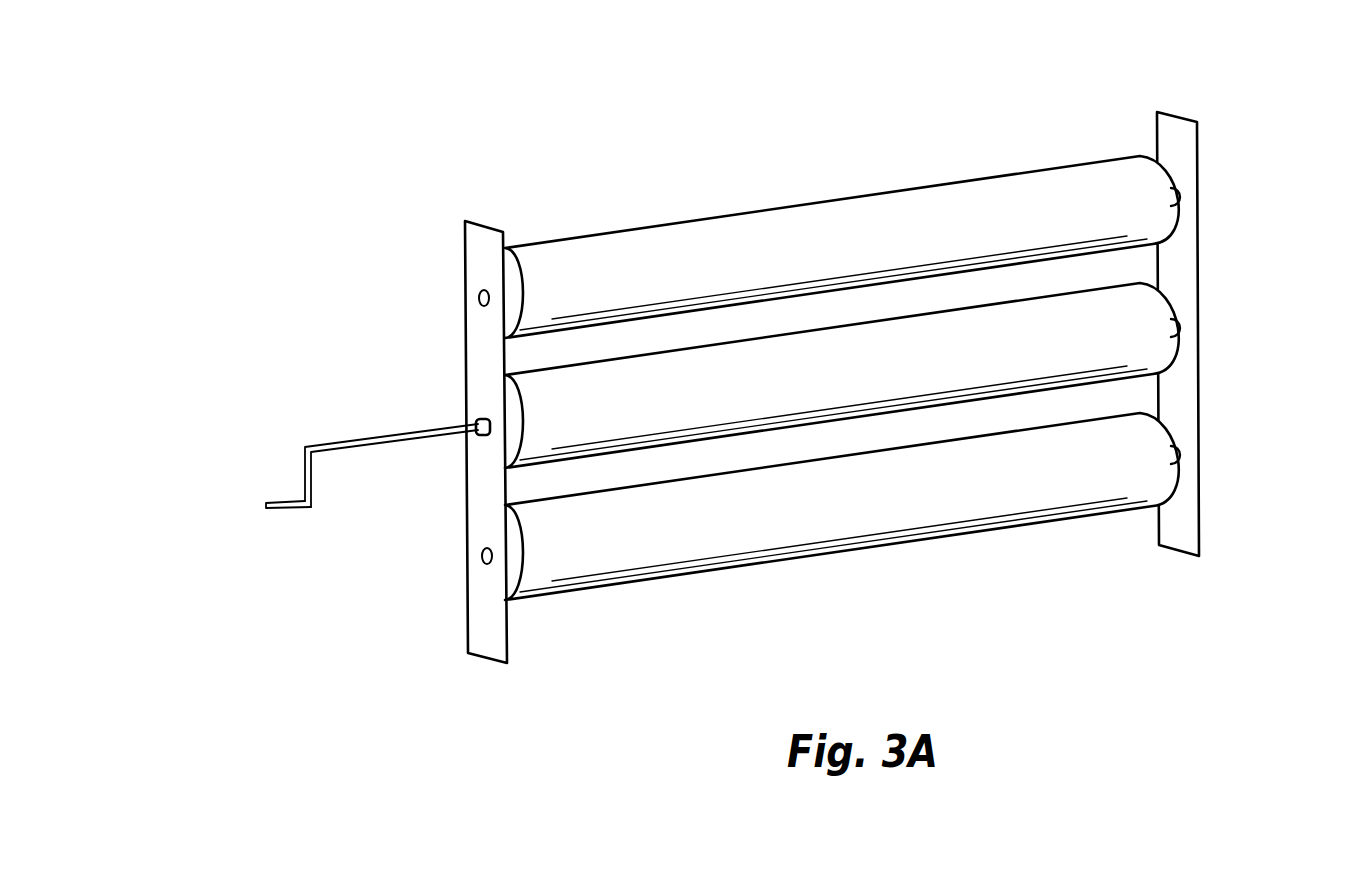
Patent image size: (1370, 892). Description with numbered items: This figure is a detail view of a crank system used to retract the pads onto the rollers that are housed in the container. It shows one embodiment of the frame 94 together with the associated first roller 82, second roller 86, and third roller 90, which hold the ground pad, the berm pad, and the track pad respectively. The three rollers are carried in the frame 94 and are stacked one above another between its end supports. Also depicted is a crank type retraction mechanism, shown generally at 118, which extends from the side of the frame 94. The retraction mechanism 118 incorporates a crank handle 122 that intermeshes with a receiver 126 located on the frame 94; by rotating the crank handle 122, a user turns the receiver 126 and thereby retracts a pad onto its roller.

The first roller 82 is at (1153, 482).
The second roller 86 is at (1153, 353).
The third roller 90 is at (1143, 178).
The frame 94 is at (1197, 247).
The retraction mechanism 118 is at (388, 426).
The crank handle 122 is at (285, 508).
The receiver 126 is at (488, 437).